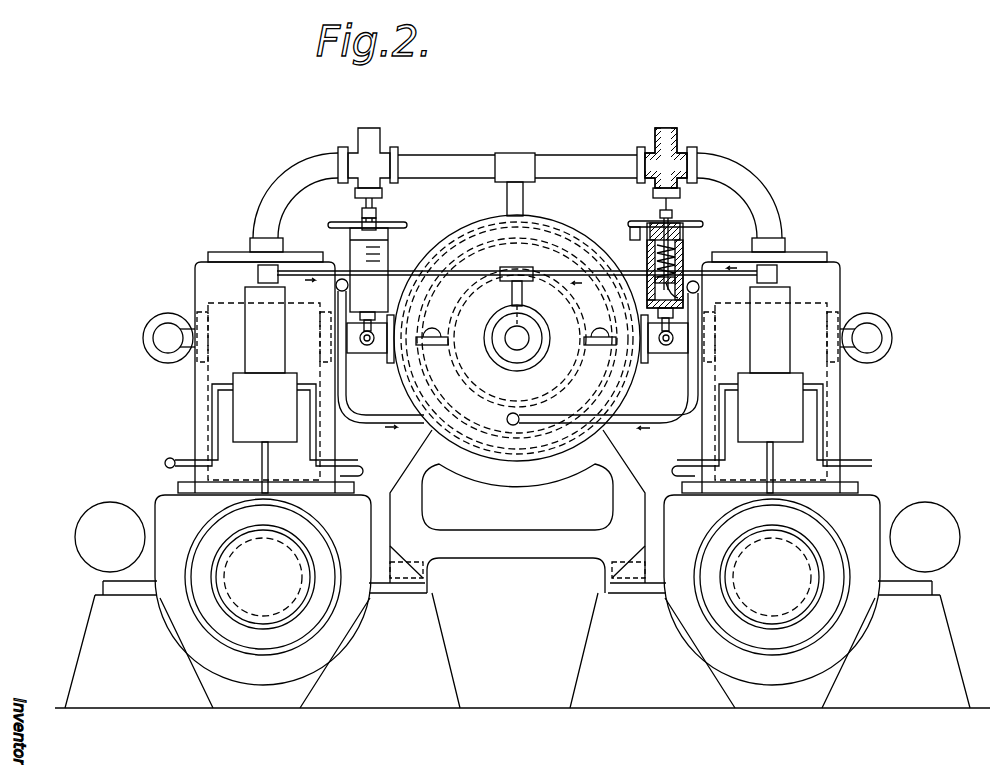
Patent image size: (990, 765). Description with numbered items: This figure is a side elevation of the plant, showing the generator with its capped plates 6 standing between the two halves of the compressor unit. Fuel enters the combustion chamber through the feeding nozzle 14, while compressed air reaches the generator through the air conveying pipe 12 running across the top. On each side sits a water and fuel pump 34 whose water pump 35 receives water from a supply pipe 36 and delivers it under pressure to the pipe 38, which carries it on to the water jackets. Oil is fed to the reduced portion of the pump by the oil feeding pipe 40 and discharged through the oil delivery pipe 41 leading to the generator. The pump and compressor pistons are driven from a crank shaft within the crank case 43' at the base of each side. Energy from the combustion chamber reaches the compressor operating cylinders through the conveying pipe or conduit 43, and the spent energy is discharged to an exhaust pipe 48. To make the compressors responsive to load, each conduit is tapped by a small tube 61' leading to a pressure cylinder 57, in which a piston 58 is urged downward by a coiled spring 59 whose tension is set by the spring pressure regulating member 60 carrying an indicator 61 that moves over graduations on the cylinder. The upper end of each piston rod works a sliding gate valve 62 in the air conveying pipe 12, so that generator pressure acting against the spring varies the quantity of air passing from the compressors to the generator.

The capped plates 6 is at (517, 338).
The air conveying pipe 12 is at (484, 152).
The feeding nozzle 14 is at (526, 330).
The water and fuel pump 34 is at (258, 346).
The water pump 35 is at (518, 407).
The supply pipe 36 is at (824, 415).
The pipe 38 is at (704, 445).
The oil feeding pipe 40 is at (263, 291).
The oil delivery pipe 41 is at (392, 270).
The conveying pipe or conduit 43 is at (515, 353).
The crank case 43' is at (519, 577).
The exhaust pipe 48 is at (163, 350).
The pressure cylinder 57 is at (349, 241).
The piston 58 is at (700, 292).
The coiled spring 59 is at (650, 264).
The spring pressure regulating member 60 is at (673, 232).
The indicator 61 is at (515, 221).
The small tube 61' is at (514, 332).
The sliding gate valve 62 is at (377, 140).